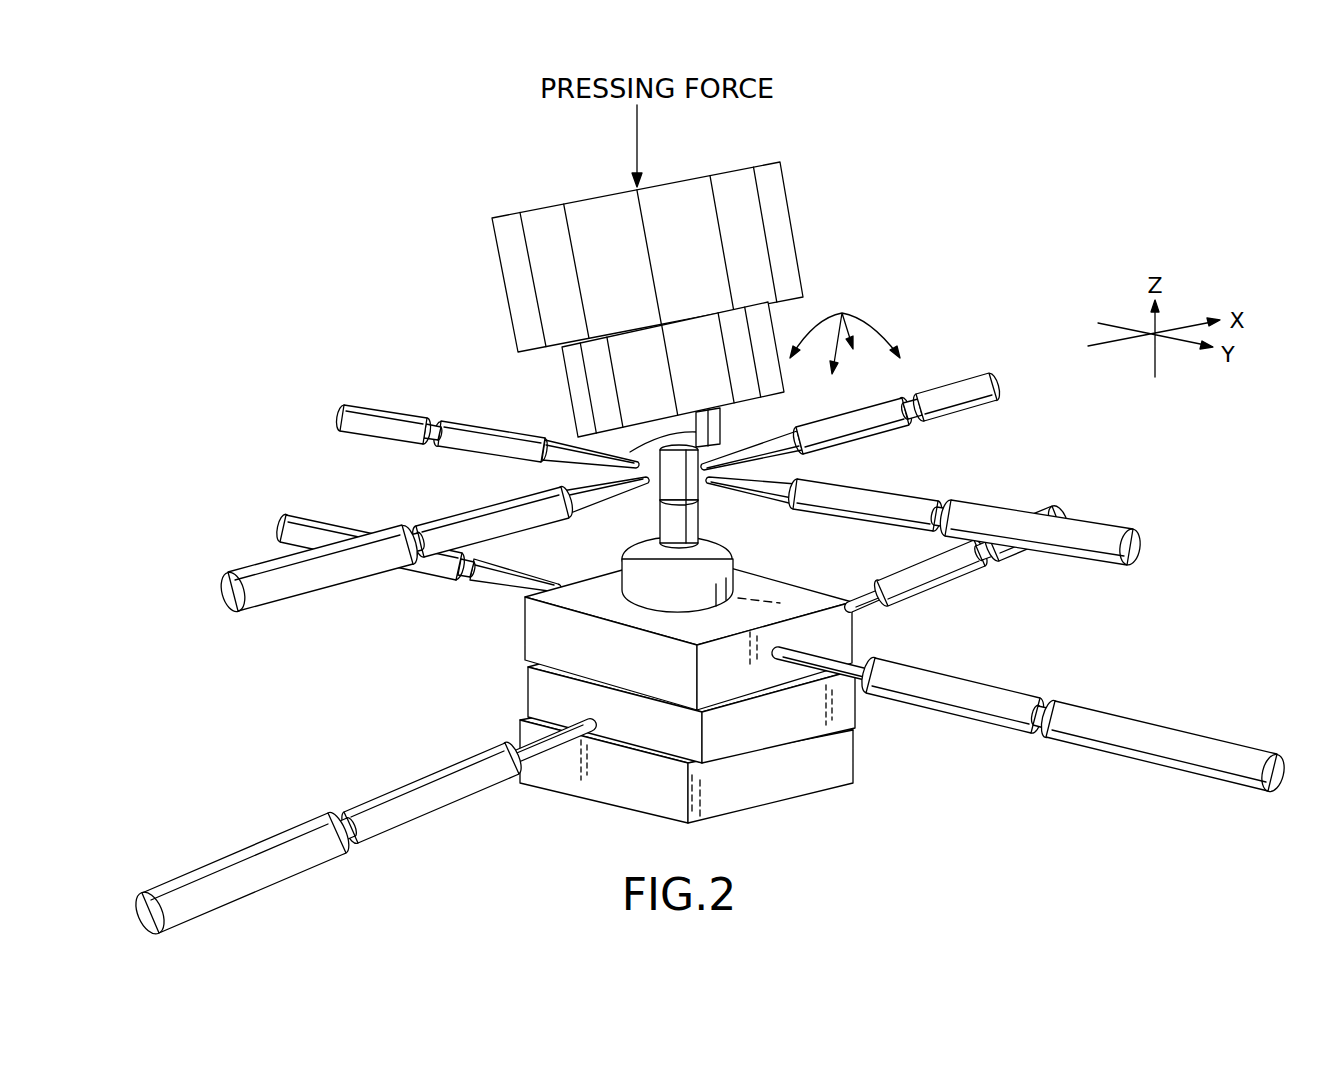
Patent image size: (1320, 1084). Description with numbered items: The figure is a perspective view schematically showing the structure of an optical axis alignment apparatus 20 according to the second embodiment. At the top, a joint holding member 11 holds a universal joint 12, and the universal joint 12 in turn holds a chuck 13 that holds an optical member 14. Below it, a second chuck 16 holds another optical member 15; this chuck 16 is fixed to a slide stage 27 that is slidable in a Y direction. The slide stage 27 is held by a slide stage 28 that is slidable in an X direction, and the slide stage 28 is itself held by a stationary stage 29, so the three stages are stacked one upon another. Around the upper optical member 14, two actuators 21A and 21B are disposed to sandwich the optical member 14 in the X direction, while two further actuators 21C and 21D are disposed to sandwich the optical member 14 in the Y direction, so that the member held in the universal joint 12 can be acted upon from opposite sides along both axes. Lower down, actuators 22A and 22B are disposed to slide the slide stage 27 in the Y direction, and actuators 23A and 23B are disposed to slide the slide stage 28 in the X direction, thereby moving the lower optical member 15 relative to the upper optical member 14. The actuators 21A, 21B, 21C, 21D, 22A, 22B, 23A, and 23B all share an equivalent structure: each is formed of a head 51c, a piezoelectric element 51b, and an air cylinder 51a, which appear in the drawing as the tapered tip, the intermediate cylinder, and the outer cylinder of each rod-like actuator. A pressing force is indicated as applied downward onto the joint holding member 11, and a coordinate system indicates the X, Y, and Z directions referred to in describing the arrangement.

The optical axis alignment apparatus 20 is at (578, 305).
The joint holding member 11 is at (517, 293).
The universal joint 12 is at (575, 383).
The chuck 13 is at (740, 417).
The optical member 14 is at (660, 497).
The optical member 15 is at (697, 530).
The chuck 16 is at (740, 553).
The slide stage 27 is at (528, 640).
The slide stage 28 is at (537, 692).
The stationary stage 29 is at (843, 763).
The actuator 21A is at (890, 390).
The actuator 21B is at (272, 614).
The actuator 21C is at (1110, 574).
The actuator 21D is at (383, 398).
The actuator 22A is at (1073, 760).
The actuator 22B is at (432, 588).
The actuator 23A is at (941, 596).
The actuator 23B is at (308, 811).
The air cylinder 51a is at (950, 372).
The piezoelectric element 51b is at (898, 430).
The head 51c is at (780, 457).